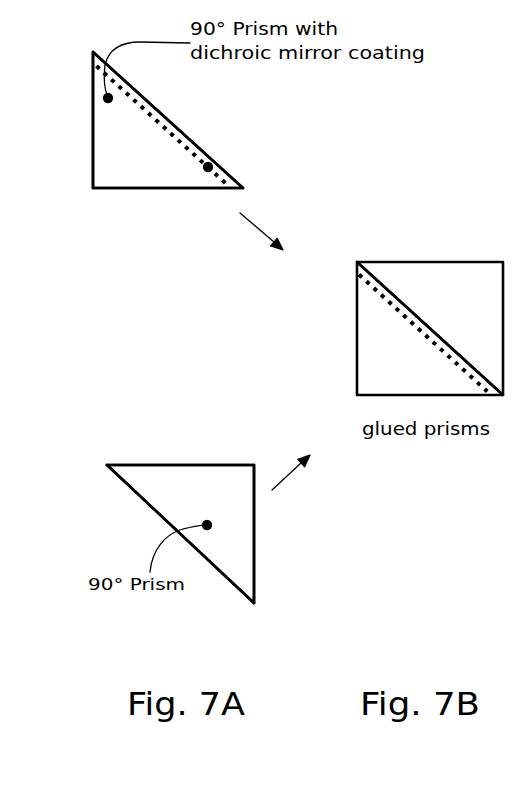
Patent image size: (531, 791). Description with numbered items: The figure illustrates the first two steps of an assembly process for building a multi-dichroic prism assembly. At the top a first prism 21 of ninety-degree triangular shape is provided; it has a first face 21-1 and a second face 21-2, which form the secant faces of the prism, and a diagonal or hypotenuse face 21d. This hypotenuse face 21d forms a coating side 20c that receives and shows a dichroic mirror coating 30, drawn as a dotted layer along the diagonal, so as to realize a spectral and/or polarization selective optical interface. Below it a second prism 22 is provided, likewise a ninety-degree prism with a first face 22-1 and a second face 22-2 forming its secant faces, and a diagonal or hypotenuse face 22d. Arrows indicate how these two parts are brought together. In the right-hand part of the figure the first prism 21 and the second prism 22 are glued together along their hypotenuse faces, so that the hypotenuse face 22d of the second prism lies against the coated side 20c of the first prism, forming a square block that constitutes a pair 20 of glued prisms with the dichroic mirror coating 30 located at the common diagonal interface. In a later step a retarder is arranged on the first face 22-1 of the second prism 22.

In FIG. 7B, the pair of prisms 20 is at (315, 331).
In FIG. 7A, the coating side 20c is at (178, 112).
In FIG. 7A, the first prism 21 is at (141, 182).
In FIG. 7B, the first prism 21 is at (406, 383).
In FIG. 7A, the first face 21-1 is at (84, 157).
In FIG. 7A, the second face 21-2 is at (168, 200).
In FIG. 7A, the hypotenuse face 21d is at (213, 120).
In FIG. 7A, the second prism 22 is at (243, 493).
In FIG. 7B, the second prism 22 is at (430, 328).
In FIG. 7A, the first face 22-1 is at (182, 452).
In FIG. 7A, the second face 22-2 is at (268, 530).
In FIG. 7A, the hypotenuse face 22d is at (141, 510).
In FIG. 7A, the dichroic mirror coating 30 is at (211, 167).